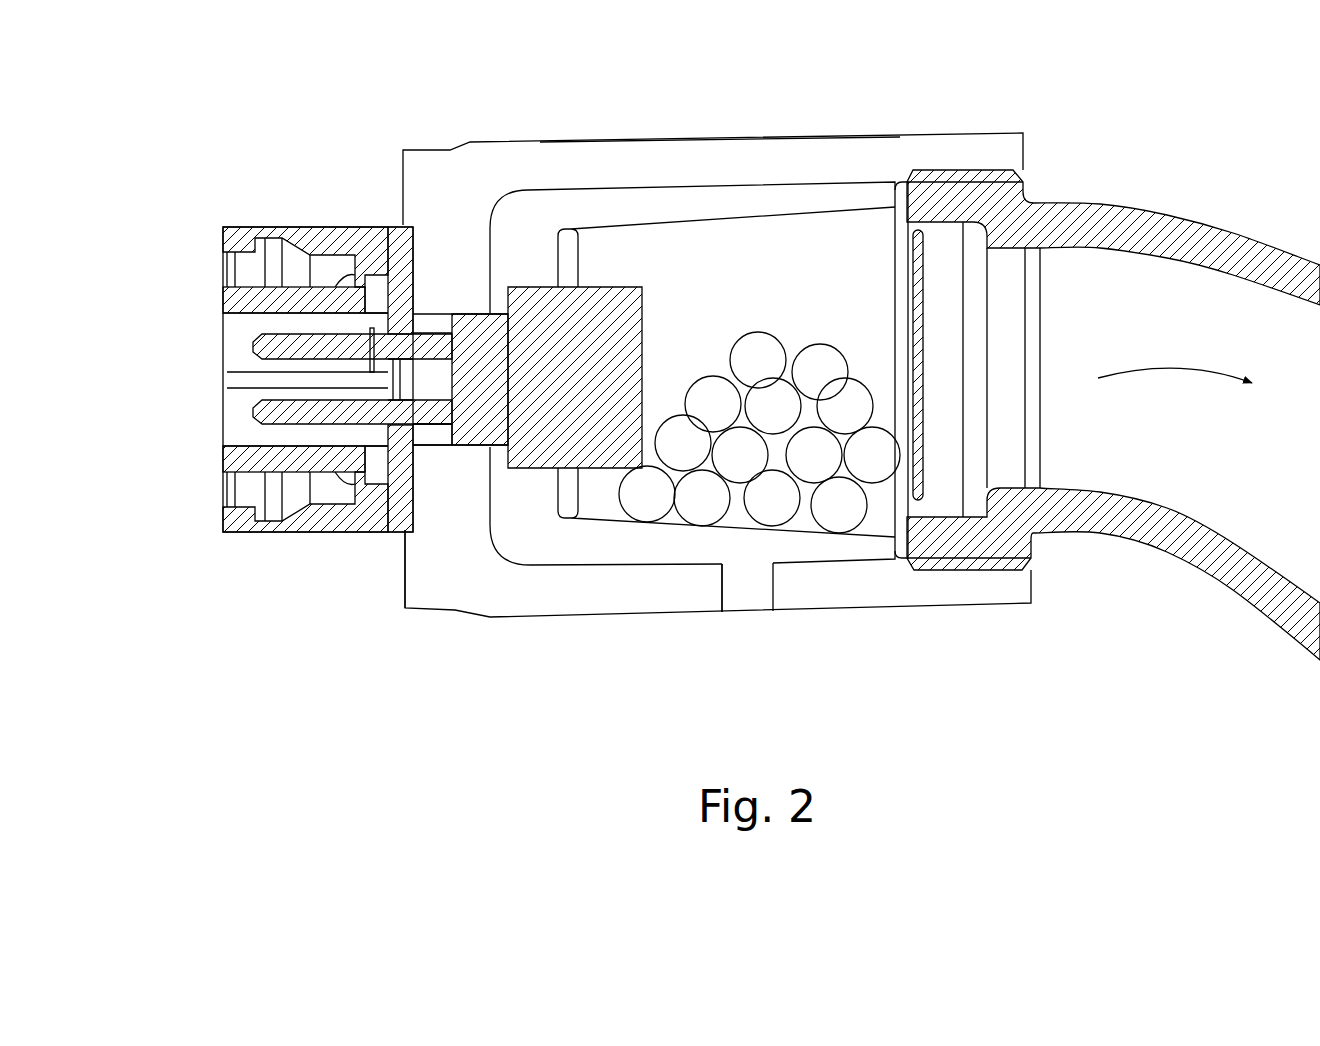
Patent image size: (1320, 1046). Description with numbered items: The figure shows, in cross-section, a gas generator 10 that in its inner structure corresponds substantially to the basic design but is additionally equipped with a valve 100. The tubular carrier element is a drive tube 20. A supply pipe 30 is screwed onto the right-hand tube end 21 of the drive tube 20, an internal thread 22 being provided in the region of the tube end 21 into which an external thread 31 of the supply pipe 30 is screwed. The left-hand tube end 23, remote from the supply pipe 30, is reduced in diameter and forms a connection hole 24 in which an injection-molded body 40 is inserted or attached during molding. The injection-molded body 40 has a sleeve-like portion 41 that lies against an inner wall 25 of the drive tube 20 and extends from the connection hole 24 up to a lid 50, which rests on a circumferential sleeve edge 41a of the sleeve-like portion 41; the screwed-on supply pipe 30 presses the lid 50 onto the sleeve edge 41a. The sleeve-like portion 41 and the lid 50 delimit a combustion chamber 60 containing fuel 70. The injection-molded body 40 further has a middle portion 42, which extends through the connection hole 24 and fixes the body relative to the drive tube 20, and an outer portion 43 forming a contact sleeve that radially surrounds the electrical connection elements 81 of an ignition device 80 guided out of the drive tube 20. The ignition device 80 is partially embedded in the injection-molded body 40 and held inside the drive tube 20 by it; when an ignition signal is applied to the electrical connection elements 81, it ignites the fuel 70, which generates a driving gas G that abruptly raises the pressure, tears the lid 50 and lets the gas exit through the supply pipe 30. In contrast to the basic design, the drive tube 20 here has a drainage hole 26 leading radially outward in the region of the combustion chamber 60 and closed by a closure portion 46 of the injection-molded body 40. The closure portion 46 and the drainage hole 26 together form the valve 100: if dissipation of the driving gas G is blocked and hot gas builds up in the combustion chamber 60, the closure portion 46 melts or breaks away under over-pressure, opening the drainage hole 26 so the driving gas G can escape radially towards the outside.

The gas generator 10 is at (1226, 142).
The valve 100 is at (651, 702).
The drive tube 20 is at (558, 590).
The tube end 21 is at (1036, 583).
The internal thread 22 is at (960, 170).
The tube end 23 is at (405, 545).
The connection hole 24 is at (433, 313).
The inner wall 25 is at (708, 183).
The drainage hole 26 is at (723, 586).
The supply pipe 30 is at (1210, 230).
The external thread 31 is at (1000, 170).
The injection-molded body 40 is at (235, 228).
The sleeve-like portion 41 is at (585, 197).
The sleeve edge 41a is at (880, 183).
The middle portion 42 is at (435, 438).
The outer portion 43 is at (322, 227).
The closure portion 46 is at (751, 580).
The lid 50 is at (940, 378).
The combustion chamber 60 is at (773, 227).
The fuel 70 is at (763, 358).
The ignition device 80 is at (612, 303).
The electrical connection elements 81 is at (253, 350).
The driving gas G is at (1188, 380).